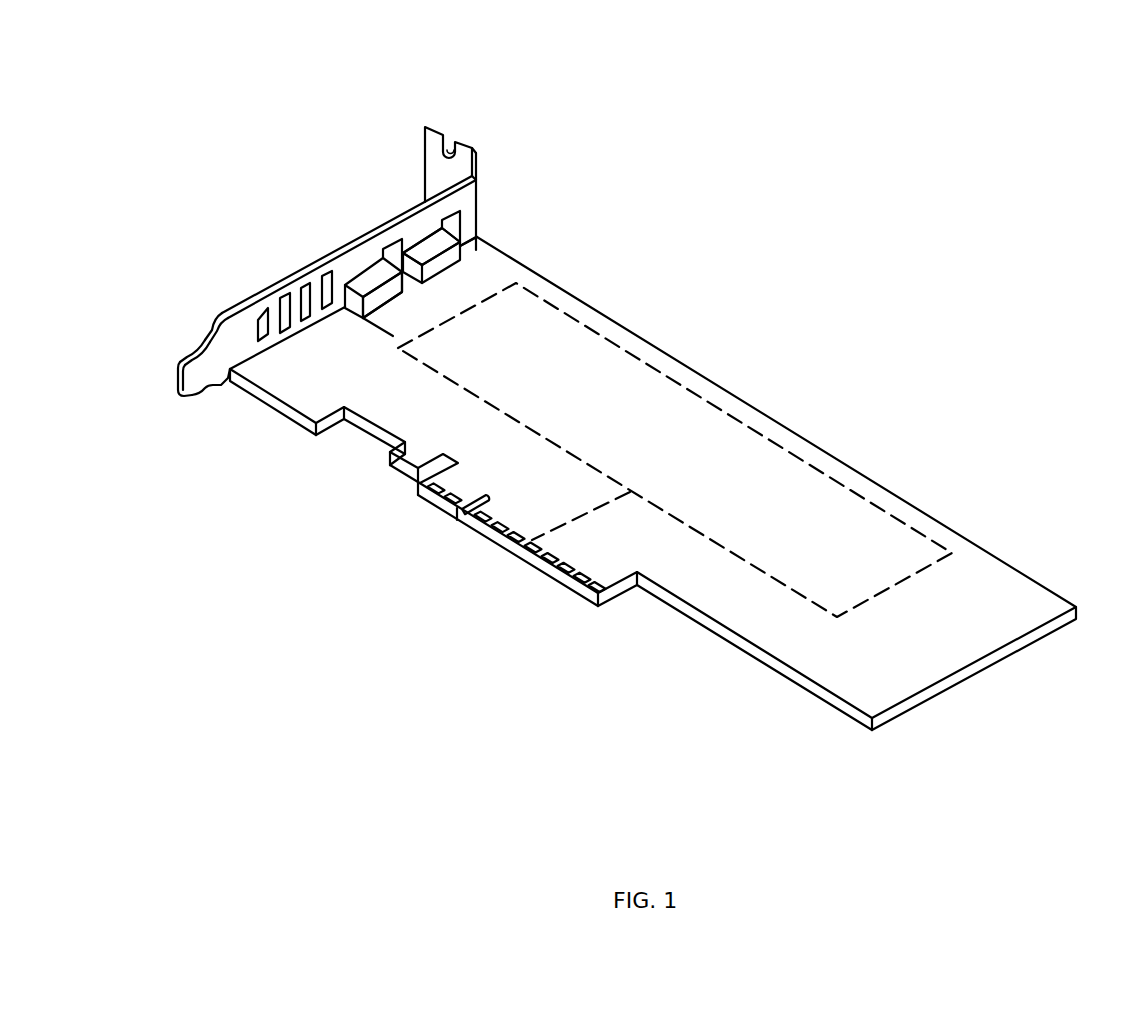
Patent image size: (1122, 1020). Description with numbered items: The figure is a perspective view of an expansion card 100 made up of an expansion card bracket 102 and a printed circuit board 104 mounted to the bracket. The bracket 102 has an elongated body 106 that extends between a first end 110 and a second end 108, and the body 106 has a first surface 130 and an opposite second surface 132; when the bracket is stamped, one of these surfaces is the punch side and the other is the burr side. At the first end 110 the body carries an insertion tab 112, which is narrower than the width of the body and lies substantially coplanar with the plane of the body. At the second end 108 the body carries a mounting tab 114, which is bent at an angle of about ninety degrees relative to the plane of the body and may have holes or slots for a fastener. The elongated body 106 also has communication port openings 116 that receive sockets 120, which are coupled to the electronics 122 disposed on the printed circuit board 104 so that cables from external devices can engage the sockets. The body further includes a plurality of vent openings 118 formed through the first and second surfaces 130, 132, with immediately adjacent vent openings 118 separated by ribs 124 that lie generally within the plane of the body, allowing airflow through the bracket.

The expansion card 100 is at (870, 246).
The expansion card bracket 102 is at (242, 292).
The printed circuit board 104 is at (1032, 598).
The elongated body 106 is at (225, 335).
The second end 108 is at (478, 190).
The first end 110 is at (177, 376).
The insertion tab 112 is at (208, 388).
The mounting tab 114 is at (435, 128).
The communication port openings 116 is at (414, 243).
The vent openings 118 is at (267, 320).
The sockets 120 is at (441, 244).
The electronics 122 is at (723, 412).
The ribs 124 is at (293, 300).
The first surface 130 is at (222, 312).
The second surface 132 is at (222, 358).